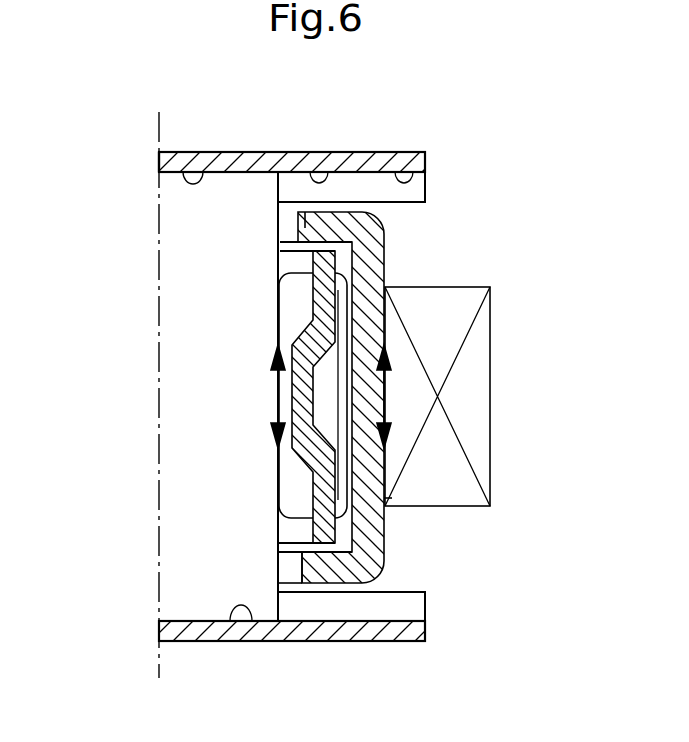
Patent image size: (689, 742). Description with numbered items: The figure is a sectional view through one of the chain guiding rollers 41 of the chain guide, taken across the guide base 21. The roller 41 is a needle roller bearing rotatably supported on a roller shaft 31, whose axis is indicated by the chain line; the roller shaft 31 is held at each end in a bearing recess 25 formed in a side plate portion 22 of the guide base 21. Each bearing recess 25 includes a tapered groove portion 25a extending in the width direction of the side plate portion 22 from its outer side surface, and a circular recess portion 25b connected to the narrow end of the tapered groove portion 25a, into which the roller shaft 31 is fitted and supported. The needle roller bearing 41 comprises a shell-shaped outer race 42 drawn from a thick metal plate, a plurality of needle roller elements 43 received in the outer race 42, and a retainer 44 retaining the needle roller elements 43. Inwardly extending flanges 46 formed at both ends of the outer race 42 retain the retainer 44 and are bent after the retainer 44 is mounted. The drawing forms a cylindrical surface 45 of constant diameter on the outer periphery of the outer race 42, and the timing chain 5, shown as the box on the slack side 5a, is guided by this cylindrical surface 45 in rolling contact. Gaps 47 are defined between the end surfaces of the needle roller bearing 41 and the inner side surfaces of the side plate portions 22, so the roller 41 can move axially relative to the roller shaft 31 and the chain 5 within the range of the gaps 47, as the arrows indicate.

The timing chain 5 is at (492, 303).
The slack side 5a is at (473, 392).
The guide base 21 is at (162, 163).
The side plate portion 22 is at (342, 165).
The bearing recess 25 is at (416, 170).
The tapered groove portion 25a is at (328, 168).
The circular recess portion 25b is at (201, 175).
The roller shaft 31 is at (185, 507).
The chain guiding roller 41 is at (387, 232).
The outer race 42 is at (373, 462).
The needle roller element 43 is at (288, 325).
The retainer 44 is at (326, 313).
The cylindrical surface 45 is at (375, 498).
The inwardly extending flange 46 is at (307, 227).
The gap 47 is at (348, 205).